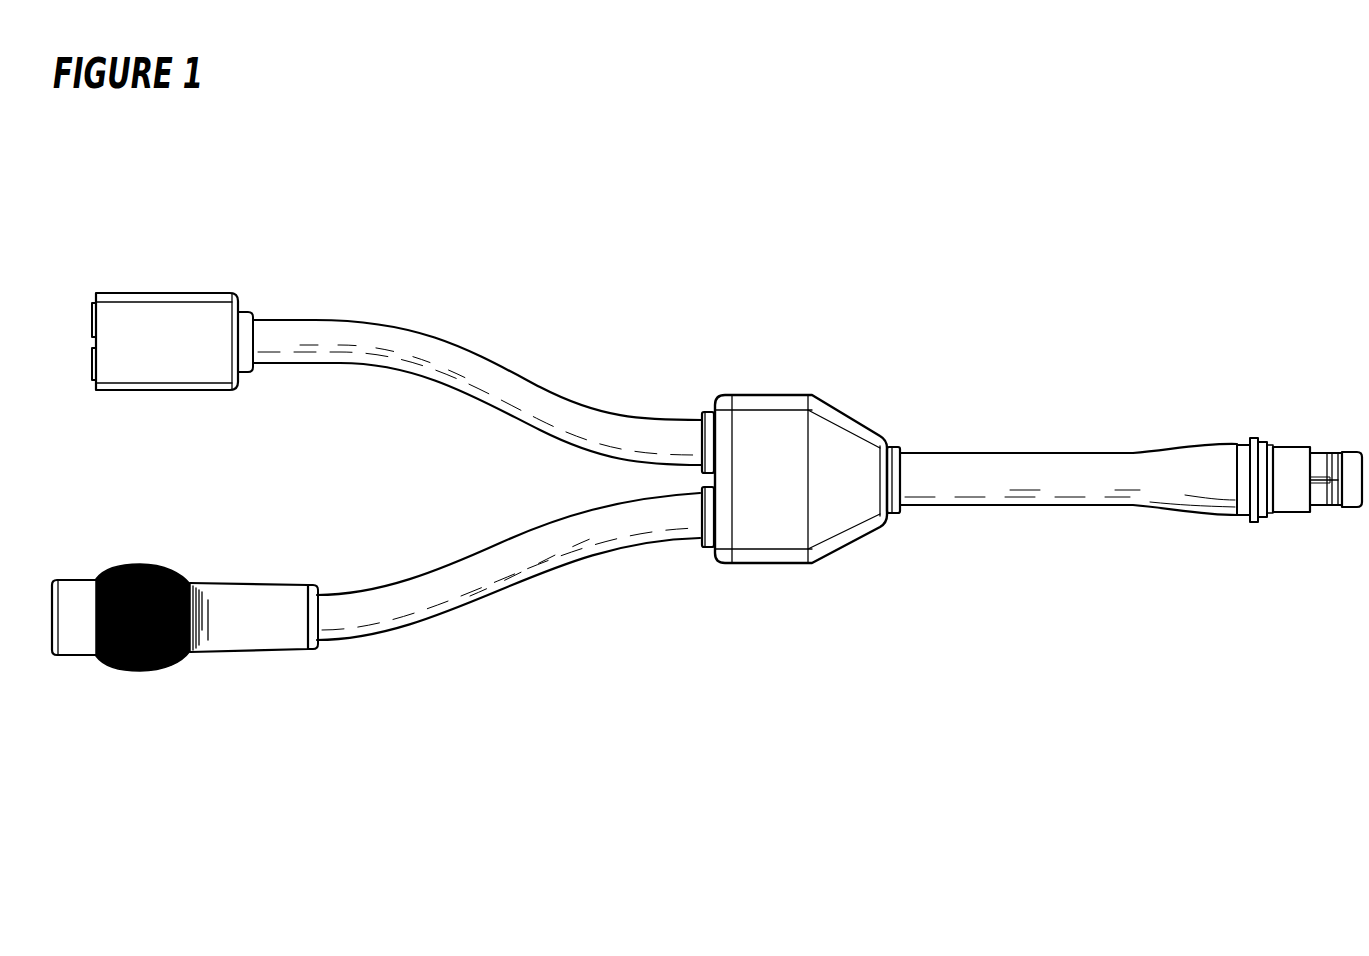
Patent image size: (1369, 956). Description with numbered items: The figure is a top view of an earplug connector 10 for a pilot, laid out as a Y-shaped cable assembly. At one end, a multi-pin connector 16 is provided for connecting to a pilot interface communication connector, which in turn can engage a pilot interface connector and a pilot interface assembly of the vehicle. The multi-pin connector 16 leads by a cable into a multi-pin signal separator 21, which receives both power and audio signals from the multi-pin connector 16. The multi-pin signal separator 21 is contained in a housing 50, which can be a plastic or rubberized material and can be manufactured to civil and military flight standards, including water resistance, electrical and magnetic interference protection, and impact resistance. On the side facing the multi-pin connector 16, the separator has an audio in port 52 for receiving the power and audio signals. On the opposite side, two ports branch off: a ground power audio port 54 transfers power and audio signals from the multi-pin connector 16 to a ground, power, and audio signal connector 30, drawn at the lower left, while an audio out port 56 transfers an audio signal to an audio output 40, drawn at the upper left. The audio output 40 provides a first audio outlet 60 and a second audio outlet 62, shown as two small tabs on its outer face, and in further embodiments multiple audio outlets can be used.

The earplug connector 10 is at (1087, 131).
The multi-pin connector 16 is at (1297, 447).
The multi-pin signal separator 21 is at (827, 576).
The ground, power, and audio signal connector 30 is at (75, 656).
The audio output 40 is at (168, 294).
The housing 50 is at (782, 395).
The audio in port 52 is at (890, 447).
The ground power audio port 54 is at (706, 548).
The audio out port 56 is at (706, 412).
The first audio outlet 60 is at (93, 318).
The second audio outlet 62 is at (93, 362).